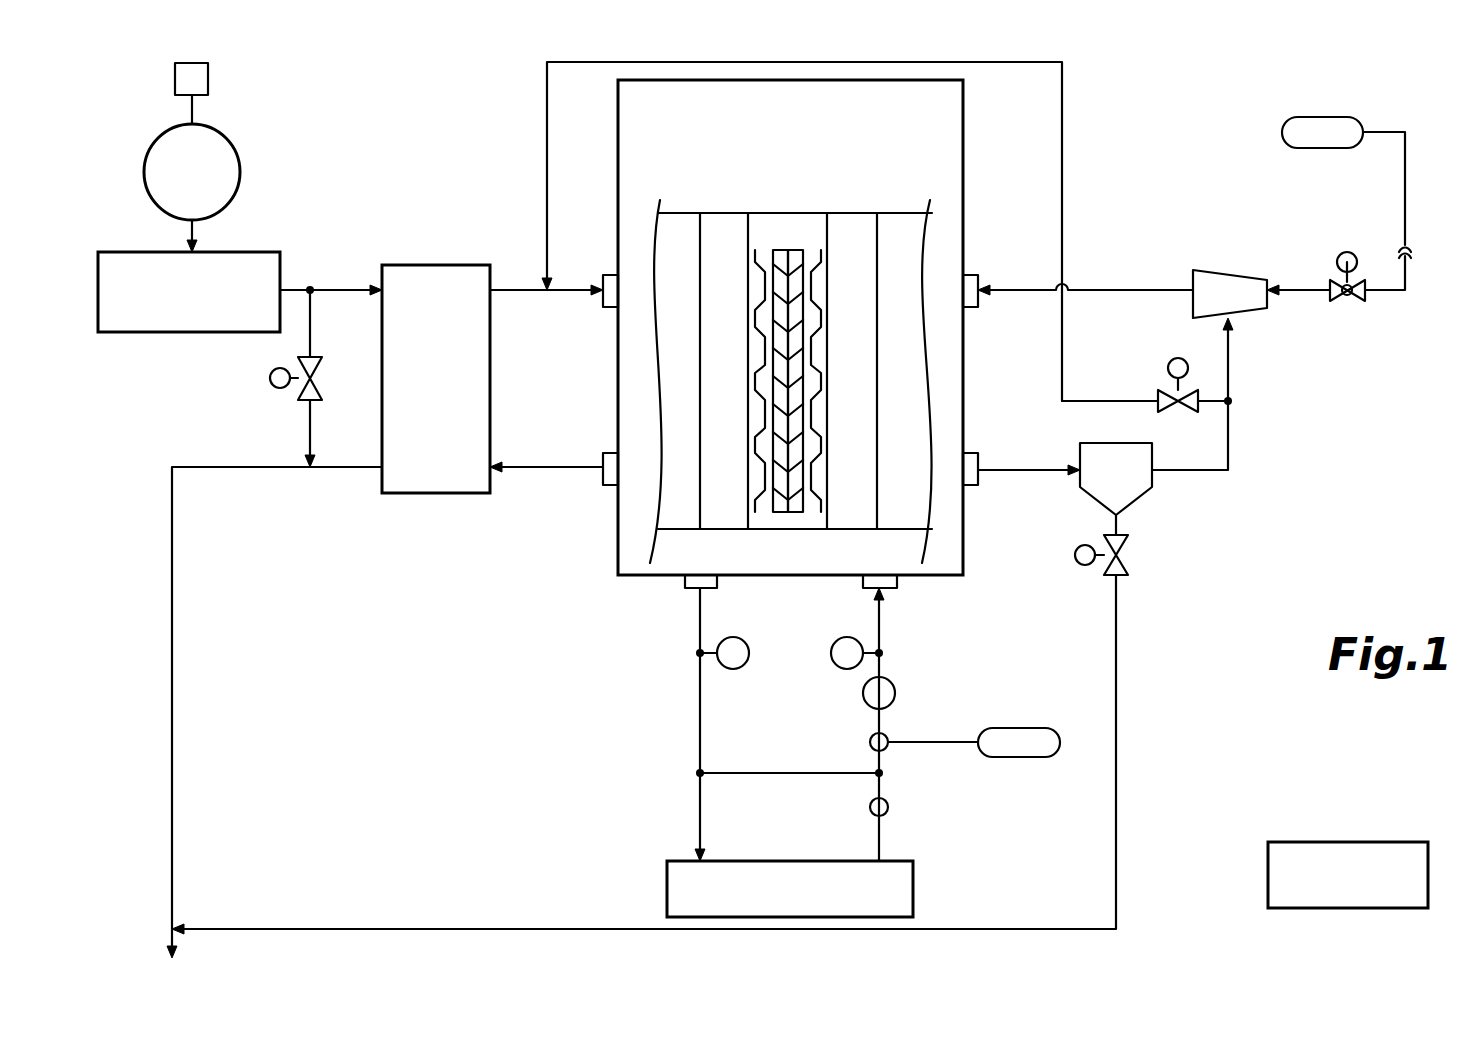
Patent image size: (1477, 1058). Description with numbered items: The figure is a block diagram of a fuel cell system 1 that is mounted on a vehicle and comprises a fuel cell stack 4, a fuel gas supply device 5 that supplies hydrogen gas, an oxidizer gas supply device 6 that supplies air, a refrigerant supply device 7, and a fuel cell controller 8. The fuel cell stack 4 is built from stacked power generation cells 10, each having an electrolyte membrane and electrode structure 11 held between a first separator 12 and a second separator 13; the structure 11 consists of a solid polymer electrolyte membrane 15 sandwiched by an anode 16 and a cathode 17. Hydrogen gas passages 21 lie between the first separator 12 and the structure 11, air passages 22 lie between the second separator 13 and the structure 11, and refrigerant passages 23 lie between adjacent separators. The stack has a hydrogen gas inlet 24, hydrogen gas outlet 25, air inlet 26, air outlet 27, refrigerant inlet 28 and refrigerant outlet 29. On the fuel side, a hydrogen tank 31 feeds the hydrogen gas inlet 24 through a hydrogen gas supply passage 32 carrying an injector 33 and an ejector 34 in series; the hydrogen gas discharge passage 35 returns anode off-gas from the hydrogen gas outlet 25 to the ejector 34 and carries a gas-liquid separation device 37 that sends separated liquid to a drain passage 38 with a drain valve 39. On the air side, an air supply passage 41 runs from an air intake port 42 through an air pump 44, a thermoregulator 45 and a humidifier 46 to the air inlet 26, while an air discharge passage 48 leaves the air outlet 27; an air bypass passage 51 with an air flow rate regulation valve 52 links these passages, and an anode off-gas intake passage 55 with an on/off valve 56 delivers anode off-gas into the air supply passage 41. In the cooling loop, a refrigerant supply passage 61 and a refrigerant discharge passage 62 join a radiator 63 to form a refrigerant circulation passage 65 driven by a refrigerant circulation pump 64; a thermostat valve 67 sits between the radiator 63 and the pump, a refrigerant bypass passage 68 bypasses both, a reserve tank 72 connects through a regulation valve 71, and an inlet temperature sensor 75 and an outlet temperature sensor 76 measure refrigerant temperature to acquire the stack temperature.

The fuel cell system 1 is at (140, 64).
The fuel cell stack 4 is at (968, 132).
The fuel gas supply device 5 is at (1298, 433).
The oxidizer gas supply device 6 is at (418, 180).
The refrigerant supply device 7 is at (632, 708).
The fuel cell controller 8 is at (1395, 842).
The power generation cell 10 is at (907, 208).
The electrolyte membrane and electrode structure 11 is at (848, 173).
The first separator 12 is at (833, 362).
The second separator 13 is at (763, 378).
The solid polymer electrolyte membrane 15 is at (788, 257).
The anode 16 is at (805, 255).
The cathode 17 is at (773, 255).
The hydrogen gas passage 21 is at (813, 427).
The air passage 22 is at (763, 443).
The refrigerant passage 23 is at (820, 290).
The hydrogen gas inlet 24 is at (972, 275).
The hydrogen gas outlet 25 is at (972, 487).
The air inlet 26 is at (608, 275).
The air outlet 27 is at (605, 485).
The refrigerant inlet 28 is at (898, 582).
The refrigerant outlet 29 is at (688, 590).
The hydrogen tank 31 is at (1323, 117).
The hydrogen gas supply passage 32 is at (1405, 200).
The injector 33 is at (1347, 303).
The ejector 34 is at (1240, 272).
The hydrogen gas discharge passage 35 is at (1200, 471).
The gas-liquid separation device 37 is at (1136, 498).
The drain passage 38 is at (1118, 782).
The drain valve 39 is at (1075, 553).
The air supply passage 41 is at (342, 290).
The air intake port 42 is at (208, 80).
The air pump 44 is at (222, 133).
The thermoregulator 45 is at (243, 252).
The humidifier 46 is at (440, 265).
The air discharge passage 48 is at (340, 468).
The air bypass passage 51 is at (310, 427).
The air flow rate regulation valve 52 is at (270, 374).
The anode off-gas intake passage 55 is at (547, 125).
The on/off valve 56 is at (1178, 358).
The refrigerant supply passage 61 is at (882, 830).
The refrigerant discharge passage 62 is at (698, 808).
The radiator 63 is at (914, 896).
The refrigerant circulation pump 64 is at (897, 693).
The refrigerant circulation passage 65 is at (660, 835).
The thermostat valve 67 is at (890, 804).
The refrigerant bypass passage 68 is at (770, 773).
The regulation valve 71 is at (870, 738).
The reserve tank 72 is at (1023, 757).
The inlet temperature sensor 75 is at (838, 665).
The outlet temperature sensor 76 is at (745, 641).